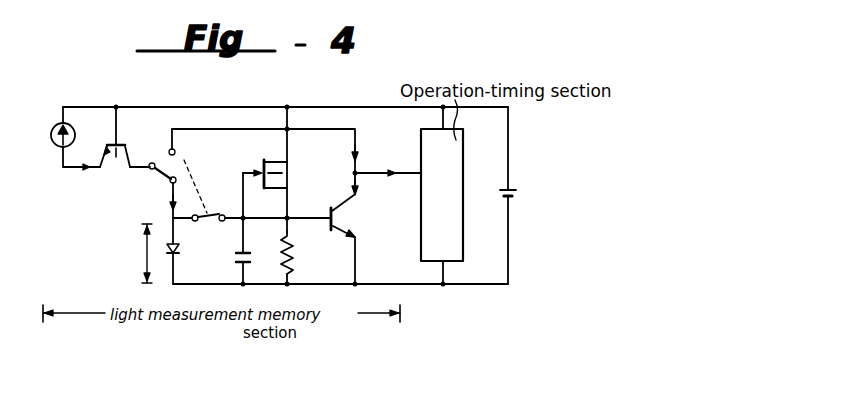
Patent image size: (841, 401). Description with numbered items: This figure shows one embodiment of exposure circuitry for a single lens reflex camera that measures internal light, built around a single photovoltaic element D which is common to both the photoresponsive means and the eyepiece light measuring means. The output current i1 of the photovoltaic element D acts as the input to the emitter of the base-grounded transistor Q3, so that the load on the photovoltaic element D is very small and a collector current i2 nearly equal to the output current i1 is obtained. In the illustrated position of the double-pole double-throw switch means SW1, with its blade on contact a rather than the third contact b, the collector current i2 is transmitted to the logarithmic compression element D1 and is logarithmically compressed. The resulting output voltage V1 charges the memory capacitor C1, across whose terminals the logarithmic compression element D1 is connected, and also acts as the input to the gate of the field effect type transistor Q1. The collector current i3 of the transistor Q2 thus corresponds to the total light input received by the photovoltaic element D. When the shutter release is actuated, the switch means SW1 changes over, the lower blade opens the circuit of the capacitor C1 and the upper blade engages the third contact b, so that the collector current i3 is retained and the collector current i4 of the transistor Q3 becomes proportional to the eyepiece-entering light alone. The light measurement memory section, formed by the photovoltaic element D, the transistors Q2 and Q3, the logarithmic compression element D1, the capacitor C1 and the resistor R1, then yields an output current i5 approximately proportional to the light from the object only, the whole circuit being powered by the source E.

The photovoltaic element D is at (58, 145).
The base-grounded transistor Q3 is at (115, 153).
The output current of the photovoltaic element i1 is at (82, 178).
The collector current of transistor Q3 i2 is at (160, 206).
The double-pole double-throw switch means SW1 is at (187, 175).
The switch contact a is at (182, 193).
The third contact b is at (181, 148).
The output voltage V1 is at (147, 253).
The logarithmic compression element D1 is at (182, 260).
The memory capacitor C1 is at (250, 254).
The field effect type transistor Q1 is at (277, 174).
The resistor R1 is at (298, 253).
The transistor Q2 is at (354, 223).
The collector current of transistor Q2 i3 is at (344, 193).
The collector current of transistor Q3 i4 is at (363, 156).
The output current of the light measurement memory section i5 is at (380, 178).
The power source battery E is at (512, 199).